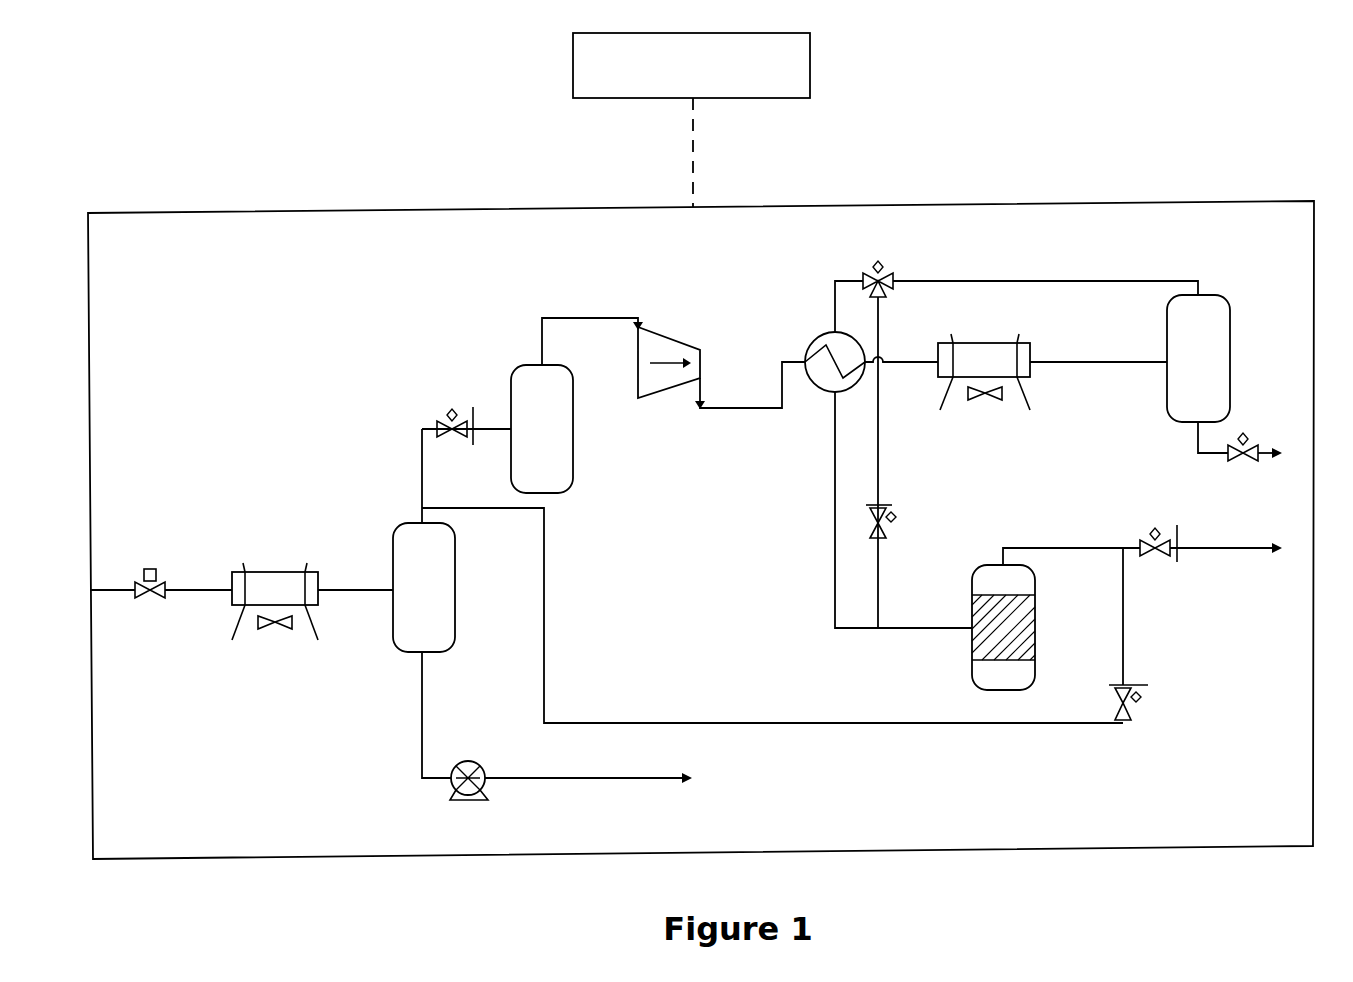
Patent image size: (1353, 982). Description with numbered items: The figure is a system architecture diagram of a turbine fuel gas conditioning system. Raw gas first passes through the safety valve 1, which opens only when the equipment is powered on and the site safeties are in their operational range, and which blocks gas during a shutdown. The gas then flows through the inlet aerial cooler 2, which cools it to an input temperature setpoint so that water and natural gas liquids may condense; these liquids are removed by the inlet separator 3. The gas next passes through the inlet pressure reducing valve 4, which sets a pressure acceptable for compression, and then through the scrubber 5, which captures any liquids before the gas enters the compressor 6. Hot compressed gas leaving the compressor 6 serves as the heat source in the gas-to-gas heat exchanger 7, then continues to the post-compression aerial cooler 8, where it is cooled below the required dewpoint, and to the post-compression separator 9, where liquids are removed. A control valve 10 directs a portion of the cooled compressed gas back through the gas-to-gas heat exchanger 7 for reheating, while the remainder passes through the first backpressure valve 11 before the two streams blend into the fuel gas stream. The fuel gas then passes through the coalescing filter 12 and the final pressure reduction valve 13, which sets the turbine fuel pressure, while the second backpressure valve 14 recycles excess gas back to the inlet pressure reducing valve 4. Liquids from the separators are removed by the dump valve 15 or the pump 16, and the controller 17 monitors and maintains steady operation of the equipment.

The safety valve 1 is at (150, 600).
The inlet aerial cooler 2 is at (275, 601).
The inlet separator 3 is at (424, 587).
The inlet pressure reducing valve 4 is at (466, 435).
The scrubber 5 is at (542, 429).
The compressor 6 is at (721, 379).
The gas-to-gas heat exchanger 7 is at (888, 454).
The post-compression aerial cooler 8 is at (1052, 372).
The post-compression separator 9 is at (1198, 374).
The control valve 10 is at (1030, 436).
The first backpressure valve 11 is at (868, 521).
The coalescing filter 12 is at (1056, 619).
The final pressure reduction valve 13 is at (1211, 558).
The second backpressure valve 14 is at (1115, 634).
The dump valve 15 is at (1255, 464).
The pump 16 is at (571, 797).
The controller 17 is at (691, 120).